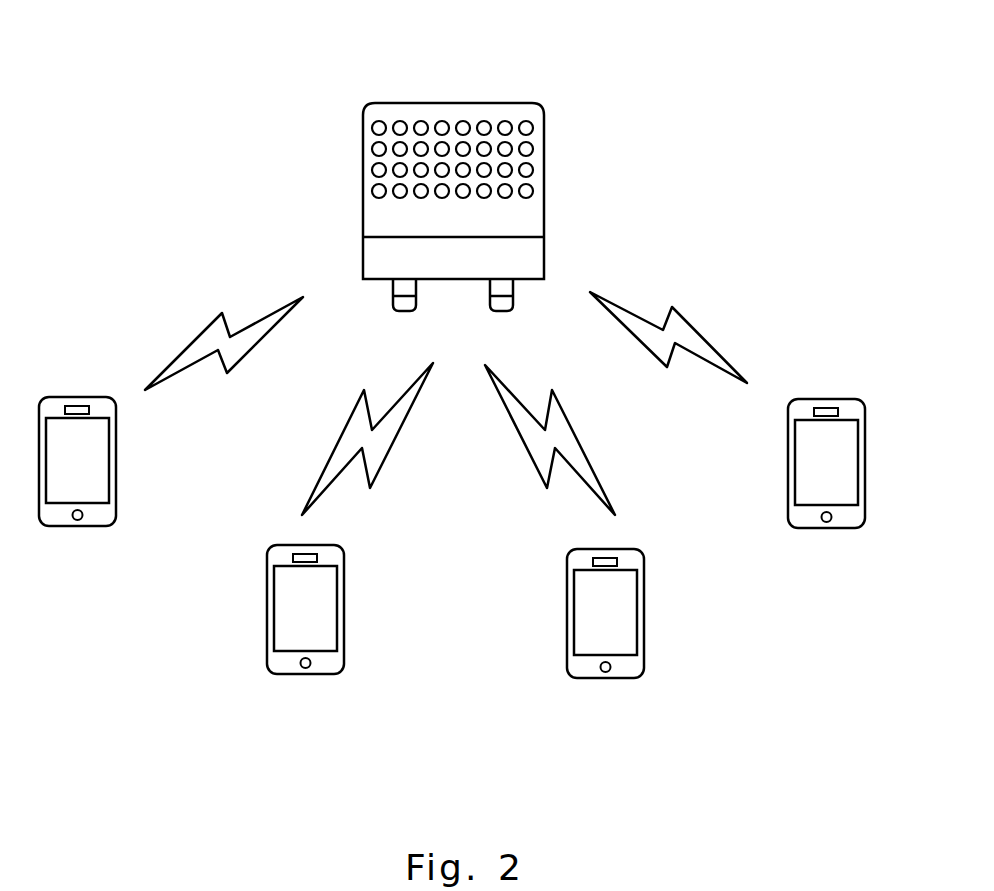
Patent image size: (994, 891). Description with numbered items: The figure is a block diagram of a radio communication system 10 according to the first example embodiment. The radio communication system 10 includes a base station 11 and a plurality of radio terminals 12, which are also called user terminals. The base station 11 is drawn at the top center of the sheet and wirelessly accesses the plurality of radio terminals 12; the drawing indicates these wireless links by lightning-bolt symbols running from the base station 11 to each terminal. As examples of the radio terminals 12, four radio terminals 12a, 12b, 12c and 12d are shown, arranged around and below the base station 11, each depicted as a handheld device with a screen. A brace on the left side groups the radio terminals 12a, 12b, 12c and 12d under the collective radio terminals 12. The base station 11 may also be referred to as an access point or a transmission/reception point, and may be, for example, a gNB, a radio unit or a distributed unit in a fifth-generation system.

The radio communication system 10 is at (487, 370).
The base station 11 is at (462, 179).
The radio terminals 12 is at (487, 569).
The radio terminal 12a is at (112, 461).
The radio terminal 12b is at (340, 609).
The radio terminal 12c is at (640, 613).
The radio terminal 12d is at (862, 463).